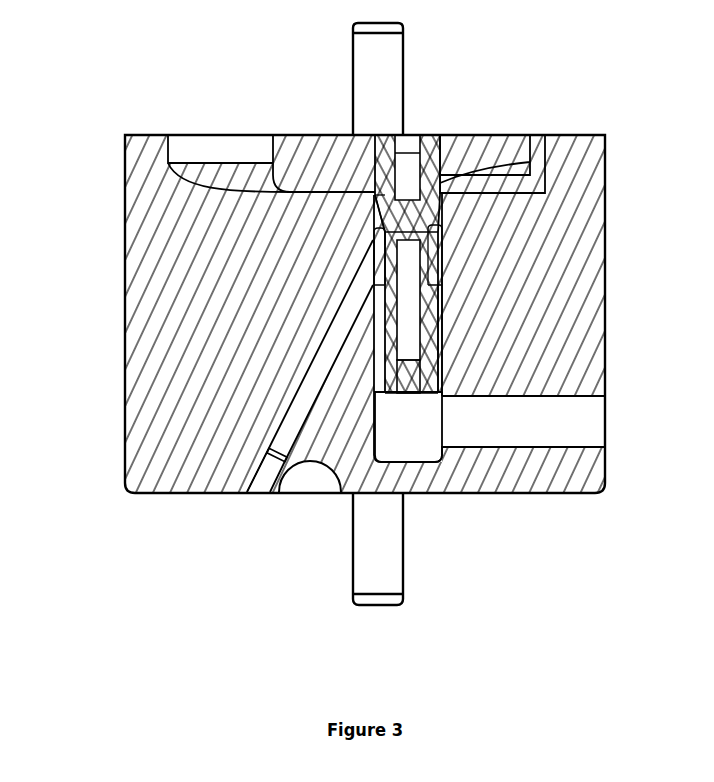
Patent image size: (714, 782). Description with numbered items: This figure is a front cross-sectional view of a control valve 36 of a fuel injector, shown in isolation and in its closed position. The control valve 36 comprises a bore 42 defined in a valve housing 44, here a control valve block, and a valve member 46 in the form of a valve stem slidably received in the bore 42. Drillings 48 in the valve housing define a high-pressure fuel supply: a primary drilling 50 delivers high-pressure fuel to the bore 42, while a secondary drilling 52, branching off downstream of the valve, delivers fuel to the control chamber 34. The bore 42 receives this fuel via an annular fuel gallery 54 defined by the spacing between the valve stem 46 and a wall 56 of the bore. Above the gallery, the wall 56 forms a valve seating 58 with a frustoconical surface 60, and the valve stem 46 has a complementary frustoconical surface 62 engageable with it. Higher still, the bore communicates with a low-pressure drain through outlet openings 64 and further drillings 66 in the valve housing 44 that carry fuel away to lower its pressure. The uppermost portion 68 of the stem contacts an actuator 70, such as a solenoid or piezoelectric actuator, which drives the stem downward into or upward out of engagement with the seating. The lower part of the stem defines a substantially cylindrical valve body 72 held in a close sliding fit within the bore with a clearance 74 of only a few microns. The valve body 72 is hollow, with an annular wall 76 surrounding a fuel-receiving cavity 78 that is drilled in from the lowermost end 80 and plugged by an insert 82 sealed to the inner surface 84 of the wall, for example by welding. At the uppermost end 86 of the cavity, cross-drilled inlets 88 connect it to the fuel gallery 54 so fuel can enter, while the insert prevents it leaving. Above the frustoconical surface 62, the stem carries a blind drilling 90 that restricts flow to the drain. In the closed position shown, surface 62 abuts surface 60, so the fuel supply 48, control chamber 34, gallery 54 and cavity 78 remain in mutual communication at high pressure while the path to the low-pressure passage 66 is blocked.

The control valve 36 is at (143, 63).
The control chamber 34 is at (300, 476).
The bore 42 is at (435, 275).
The valve housing 44 is at (365, 314).
The valve member 46 is at (275, 410).
The drillings 48 is at (280, 460).
The primary drilling 50 is at (263, 412).
The secondary drilling 52 is at (278, 463).
The annular fuel gallery 54 is at (443, 232).
The wall of the bore 56 is at (445, 257).
The valve seating 58 is at (380, 222).
The frustoconical surface 60 is at (366, 208).
The frustoconical surface 62 is at (387, 238).
The outlet openings 64 is at (565, 135).
The further drillings 66 is at (330, 195).
The uppermost portion 68 is at (438, 140).
The actuator 70 is at (497, 150).
The valve body 72 is at (450, 308).
The clearance 74 is at (437, 363).
The annular wall 76 is at (438, 328).
The fuel-receiving cavity 78 is at (403, 332).
The lowermost end 80 is at (408, 395).
The insert 82 is at (410, 384).
The inner surface 84 is at (428, 370).
The uppermost end 86 is at (412, 225).
The inlets 88 is at (377, 257).
The blind drilling 90 is at (405, 172).